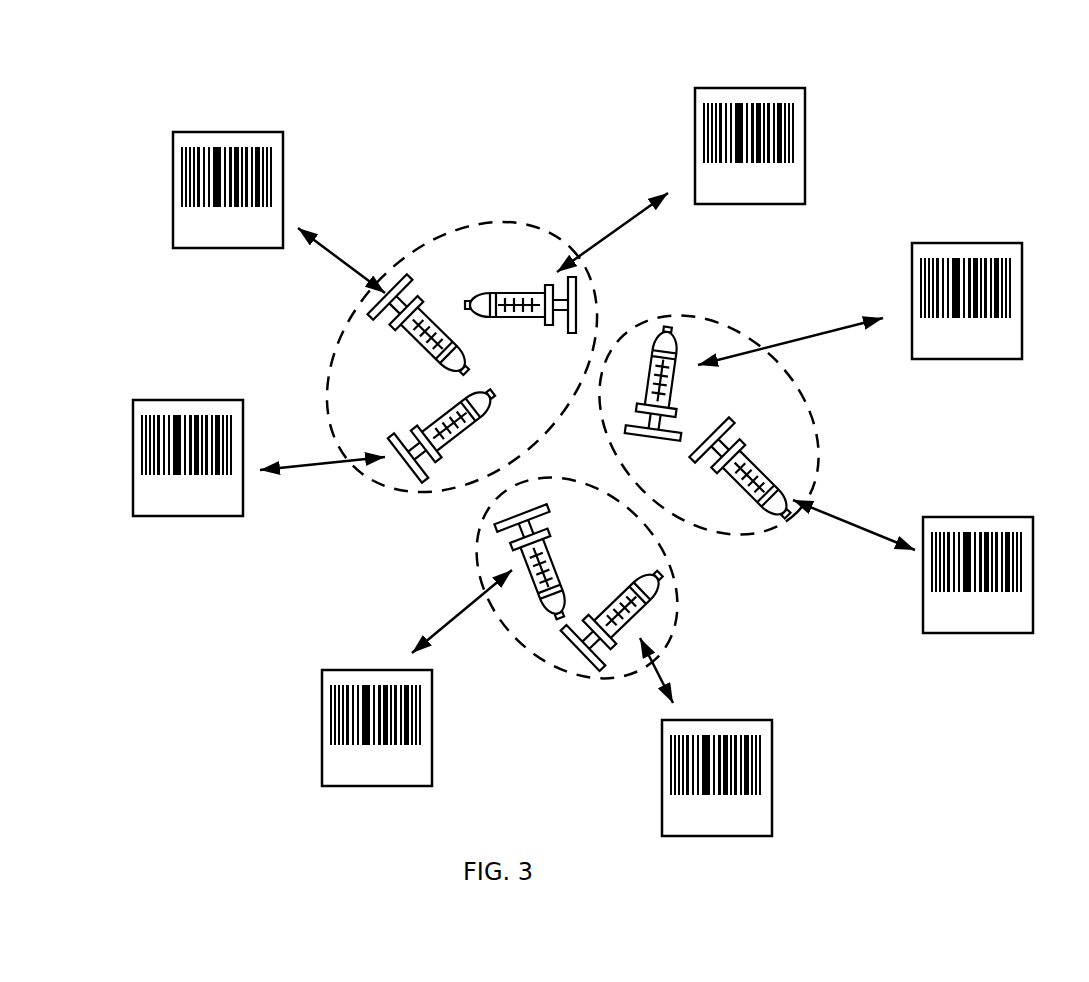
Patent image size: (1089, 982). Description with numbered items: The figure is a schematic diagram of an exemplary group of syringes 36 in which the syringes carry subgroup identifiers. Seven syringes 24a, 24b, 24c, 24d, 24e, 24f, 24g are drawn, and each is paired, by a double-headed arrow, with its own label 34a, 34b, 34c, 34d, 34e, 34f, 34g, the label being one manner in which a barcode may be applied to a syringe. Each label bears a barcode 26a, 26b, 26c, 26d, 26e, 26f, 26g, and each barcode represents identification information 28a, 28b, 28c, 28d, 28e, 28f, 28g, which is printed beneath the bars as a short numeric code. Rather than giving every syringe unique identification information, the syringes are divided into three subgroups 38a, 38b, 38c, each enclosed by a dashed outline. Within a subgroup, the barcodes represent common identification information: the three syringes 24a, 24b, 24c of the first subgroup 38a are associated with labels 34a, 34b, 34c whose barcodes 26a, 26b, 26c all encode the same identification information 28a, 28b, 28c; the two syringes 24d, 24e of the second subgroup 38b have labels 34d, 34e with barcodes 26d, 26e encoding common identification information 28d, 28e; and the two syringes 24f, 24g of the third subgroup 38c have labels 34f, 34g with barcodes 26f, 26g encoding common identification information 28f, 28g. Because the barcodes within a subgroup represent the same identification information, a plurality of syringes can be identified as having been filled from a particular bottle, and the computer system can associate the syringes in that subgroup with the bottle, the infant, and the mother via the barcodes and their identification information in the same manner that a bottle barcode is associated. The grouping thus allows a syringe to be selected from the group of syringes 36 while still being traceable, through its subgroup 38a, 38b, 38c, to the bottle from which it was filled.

The syringe 24a is at (440, 413).
The syringe 24b is at (420, 300).
The syringe 24c is at (517, 290).
The syringe 24d is at (672, 332).
The syringe 24e is at (767, 467).
The syringe 24f is at (660, 598).
The syringe 24g is at (496, 526).
The barcode 26a is at (161, 415).
The barcode 26b is at (203, 150).
The barcode 26c is at (720, 103).
The barcode 26d is at (937, 258).
The barcode 26e is at (948, 532).
The barcode 26f is at (670, 740).
The barcode 26g is at (340, 690).
The identification information 28a is at (189, 504).
The identification information 28b is at (229, 240).
The identification information 28c is at (749, 192).
The identification information 28d is at (967, 348).
The identification information 28e is at (977, 622).
The identification information 28f is at (717, 828).
The identification information 28g is at (375, 782).
The label 34a is at (203, 454).
The label 34b is at (244, 187).
The label 34c is at (764, 140).
The label 34d is at (979, 296).
The label 34e is at (990, 569).
The label 34f is at (711, 773).
The label 34g is at (364, 714).
The group of syringes 36 is at (464, 85).
The subgroup of syringes 38a is at (475, 222).
The subgroup of syringes 38b is at (815, 402).
The subgroup of syringes 38c is at (547, 658).